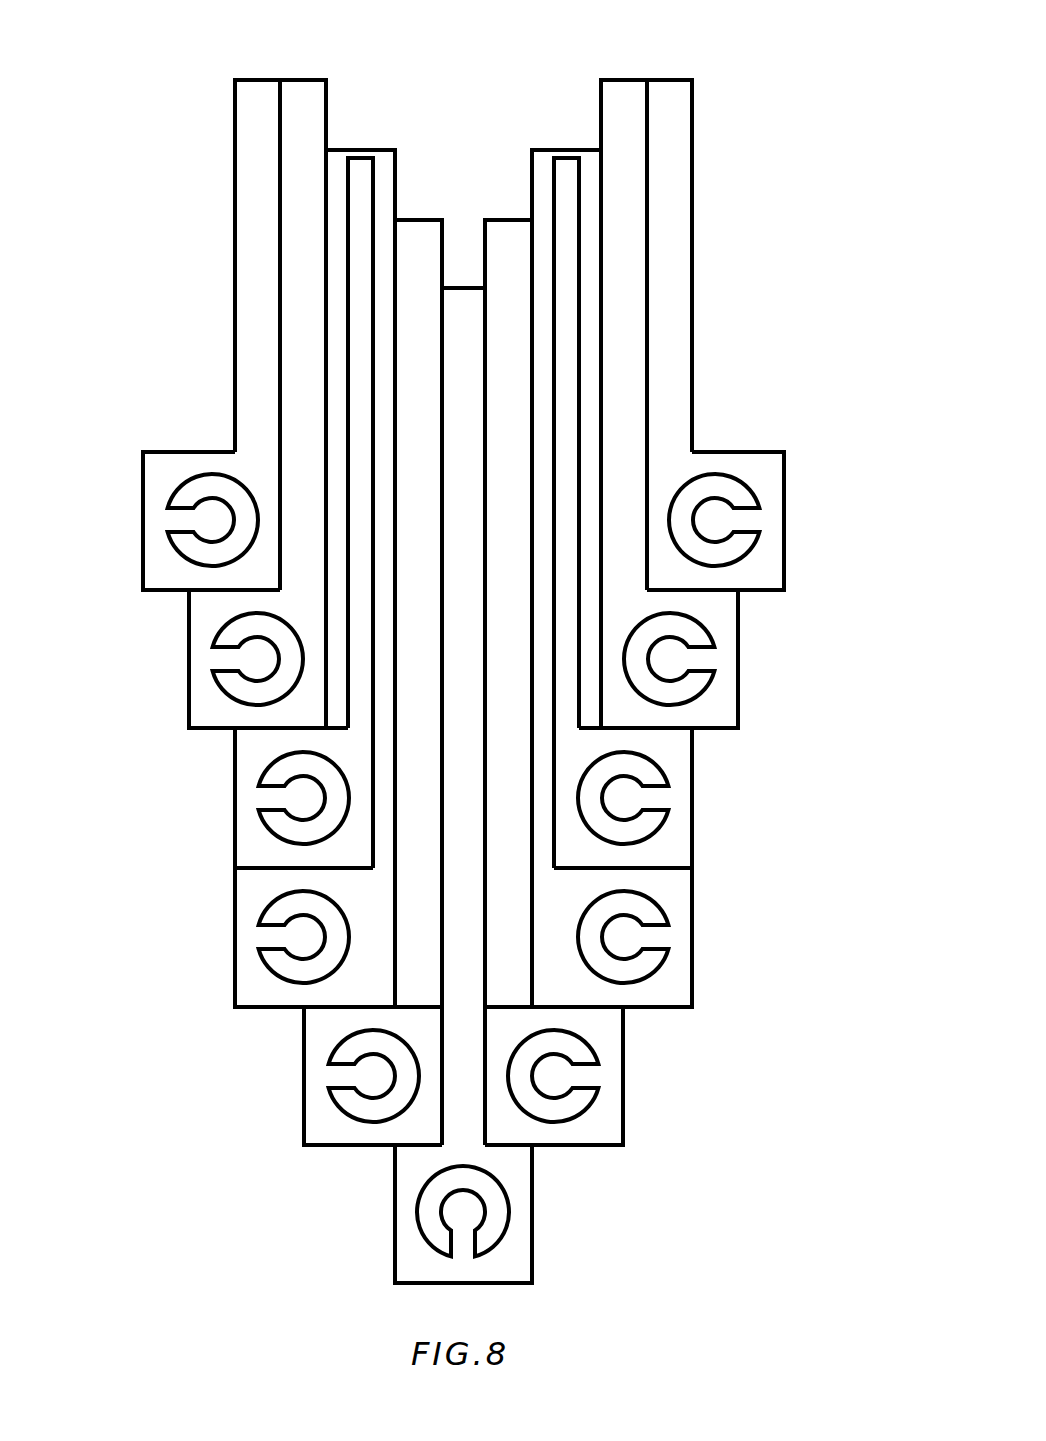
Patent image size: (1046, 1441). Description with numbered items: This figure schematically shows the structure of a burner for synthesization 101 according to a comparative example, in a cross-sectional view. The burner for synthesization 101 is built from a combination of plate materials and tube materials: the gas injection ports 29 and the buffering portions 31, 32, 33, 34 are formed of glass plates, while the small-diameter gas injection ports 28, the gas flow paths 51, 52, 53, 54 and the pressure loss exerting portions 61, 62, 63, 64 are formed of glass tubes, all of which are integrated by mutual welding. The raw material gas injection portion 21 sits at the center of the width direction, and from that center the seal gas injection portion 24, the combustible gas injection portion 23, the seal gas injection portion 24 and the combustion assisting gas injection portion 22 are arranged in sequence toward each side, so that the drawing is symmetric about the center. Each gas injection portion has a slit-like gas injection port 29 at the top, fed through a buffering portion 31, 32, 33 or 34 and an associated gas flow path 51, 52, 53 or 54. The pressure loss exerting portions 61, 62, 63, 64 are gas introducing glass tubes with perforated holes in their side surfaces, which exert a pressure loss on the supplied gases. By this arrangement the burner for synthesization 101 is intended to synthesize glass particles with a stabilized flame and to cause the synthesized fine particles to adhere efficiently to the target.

The burner for synthesization 101 is at (73, 23).
The gas injection port 29 is at (260, 82).
The gas injection port 28 is at (362, 160).
The raw material gas injection portion 21 is at (481, 1234).
The combustion assisting gas injection portion 22 is at (460, 680).
The combustible gas injection portion 23 is at (481, 958).
The seal gas injection portion 24 is at (481, 889).
The buffering portion 31 is at (518, 1180).
The buffering portion 32 is at (773, 470).
The buffering portion 33 is at (677, 890).
The buffering portion 34 is at (722, 608).
The gas flow path 51 is at (460, 1210).
The gas flow path 52 is at (208, 518).
The gas flow path 53 is at (300, 938).
The gas flow path 54 is at (253, 658).
The pressure loss exerting portion 61 is at (452, 1253).
The pressure loss exerting portion 62 is at (748, 522).
The pressure loss exerting portion 63 is at (653, 942).
The pressure loss exerting portion 64 is at (670, 657).